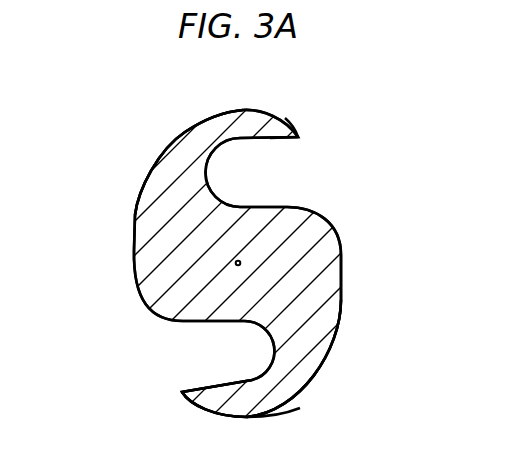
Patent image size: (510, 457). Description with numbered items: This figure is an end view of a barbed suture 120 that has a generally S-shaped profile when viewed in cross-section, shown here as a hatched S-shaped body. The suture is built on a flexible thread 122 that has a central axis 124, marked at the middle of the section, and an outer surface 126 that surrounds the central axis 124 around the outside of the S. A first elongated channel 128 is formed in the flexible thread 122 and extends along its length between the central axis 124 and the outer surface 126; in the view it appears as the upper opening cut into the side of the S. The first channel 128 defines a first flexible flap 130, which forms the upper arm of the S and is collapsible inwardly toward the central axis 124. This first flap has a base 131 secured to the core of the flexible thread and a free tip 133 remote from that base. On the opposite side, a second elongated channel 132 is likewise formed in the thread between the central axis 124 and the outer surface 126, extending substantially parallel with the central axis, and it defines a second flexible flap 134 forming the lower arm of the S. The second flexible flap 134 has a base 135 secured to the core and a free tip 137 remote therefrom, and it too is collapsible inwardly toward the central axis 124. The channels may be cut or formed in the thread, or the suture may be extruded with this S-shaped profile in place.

The barbed suture 120 is at (102, 117).
The flexible thread 122 is at (134, 263).
The central axis 124 is at (240, 263).
The outer surface 126 is at (193, 128).
The first elongated channel 128 is at (310, 181).
The first flexible flap 130 is at (232, 122).
The base 131 is at (177, 197).
The second elongated channel 132 is at (170, 346).
The free tip 133 is at (296, 138).
The second flexible flap 134 is at (253, 408).
The base 135 is at (307, 340).
The free tip 137 is at (181, 391).